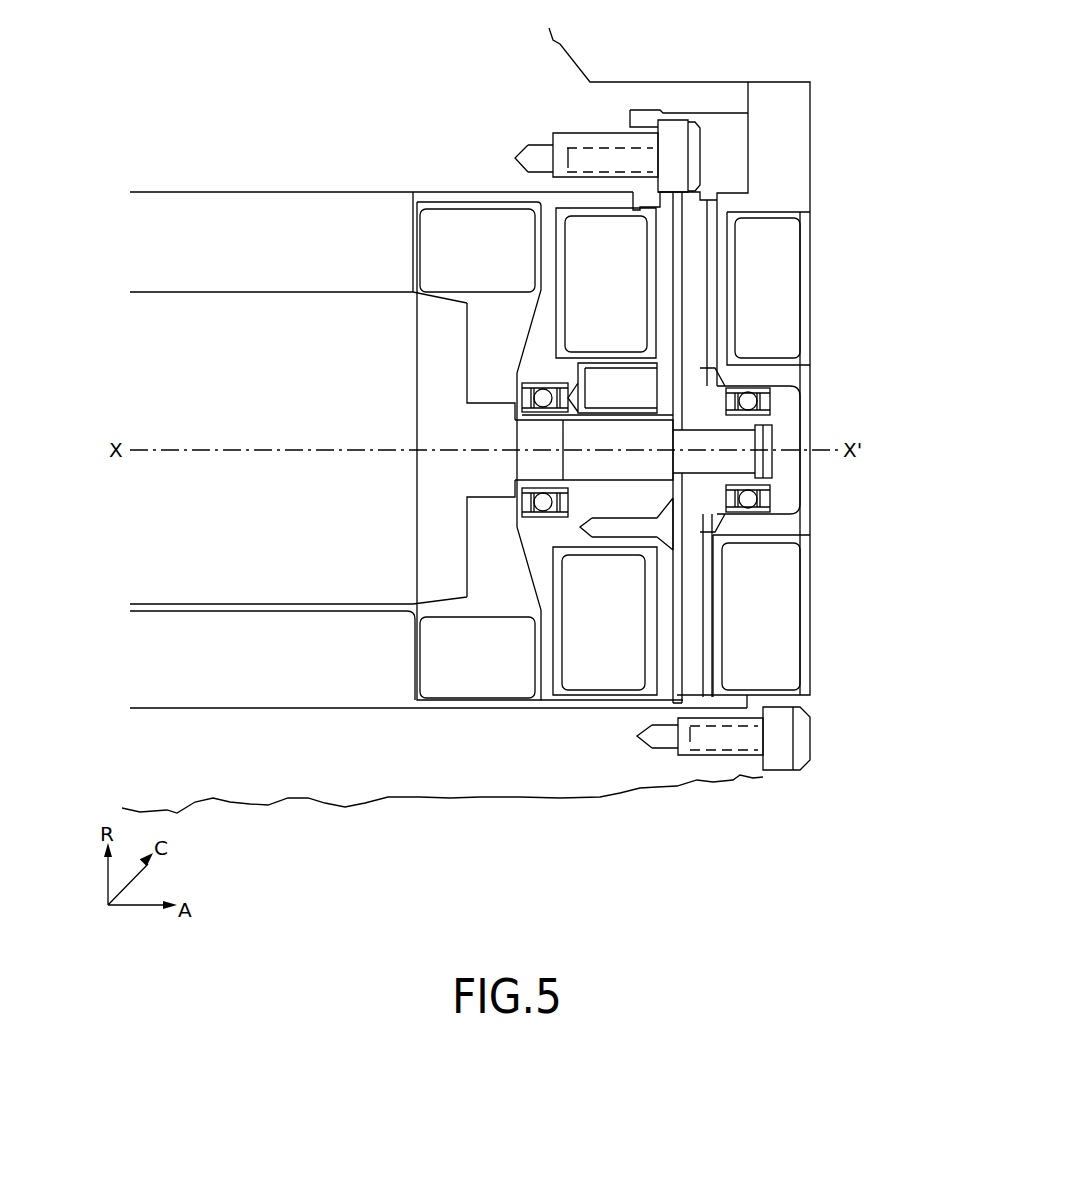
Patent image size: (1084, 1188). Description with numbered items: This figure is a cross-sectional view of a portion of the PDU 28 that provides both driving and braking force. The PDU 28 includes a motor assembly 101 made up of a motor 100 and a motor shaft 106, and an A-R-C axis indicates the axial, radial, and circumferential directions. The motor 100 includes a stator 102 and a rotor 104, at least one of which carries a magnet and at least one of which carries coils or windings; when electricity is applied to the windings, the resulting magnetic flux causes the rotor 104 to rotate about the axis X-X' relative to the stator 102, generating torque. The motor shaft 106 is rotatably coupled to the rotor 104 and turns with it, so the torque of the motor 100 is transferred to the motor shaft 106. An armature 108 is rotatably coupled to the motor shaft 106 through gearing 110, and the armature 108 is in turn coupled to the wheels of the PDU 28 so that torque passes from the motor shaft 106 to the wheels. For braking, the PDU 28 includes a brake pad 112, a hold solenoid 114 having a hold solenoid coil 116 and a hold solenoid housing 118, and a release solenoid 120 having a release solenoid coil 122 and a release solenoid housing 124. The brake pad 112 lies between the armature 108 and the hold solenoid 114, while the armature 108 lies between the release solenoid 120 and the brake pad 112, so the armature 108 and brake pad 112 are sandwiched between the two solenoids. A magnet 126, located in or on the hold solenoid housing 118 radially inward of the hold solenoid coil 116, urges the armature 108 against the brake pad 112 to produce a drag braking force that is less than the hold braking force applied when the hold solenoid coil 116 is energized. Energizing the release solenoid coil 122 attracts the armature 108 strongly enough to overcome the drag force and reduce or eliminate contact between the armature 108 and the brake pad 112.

The motor 100 is at (165, 157).
The PDU 28 is at (272, 123).
The motor assembly 101 is at (145, 390).
The stator 102 is at (283, 250).
The rotor 104 is at (284, 372).
The motor shaft 106 is at (720, 438).
The armature 108 is at (693, 207).
The gearing 110 is at (767, 387).
The brake pad 112 is at (677, 227).
The hold solenoid 114 is at (575, 213).
The hold solenoid coil 116 is at (608, 220).
The hold solenoid housing 118 is at (547, 240).
The release solenoid 120 is at (808, 607).
The release solenoid coil 122 is at (767, 675).
The release solenoid housing 124 is at (722, 672).
The magnet 126 is at (603, 395).